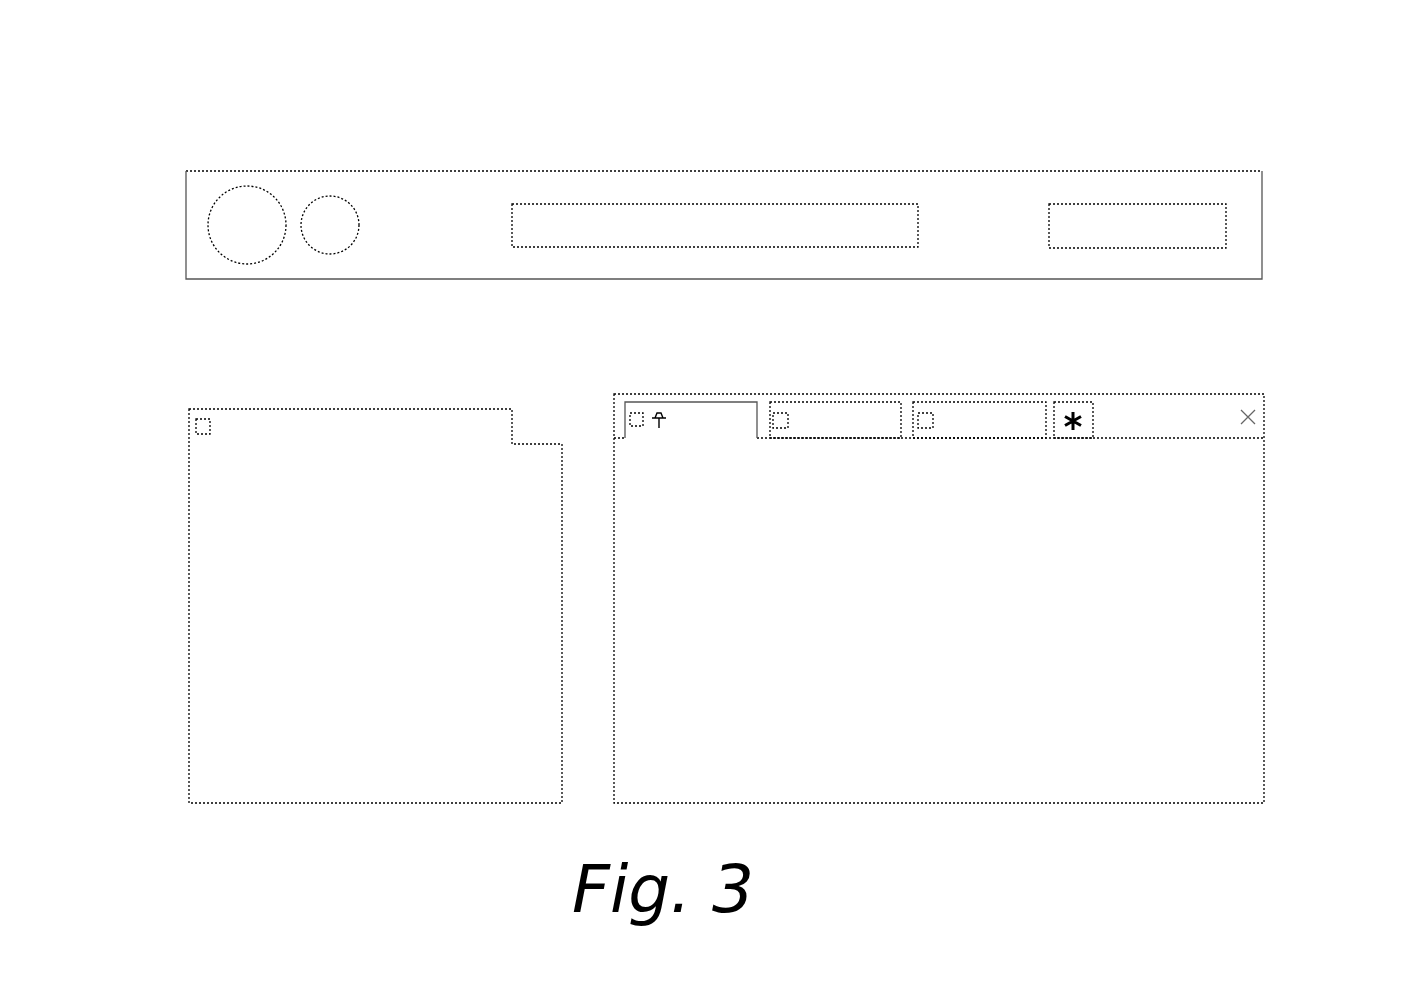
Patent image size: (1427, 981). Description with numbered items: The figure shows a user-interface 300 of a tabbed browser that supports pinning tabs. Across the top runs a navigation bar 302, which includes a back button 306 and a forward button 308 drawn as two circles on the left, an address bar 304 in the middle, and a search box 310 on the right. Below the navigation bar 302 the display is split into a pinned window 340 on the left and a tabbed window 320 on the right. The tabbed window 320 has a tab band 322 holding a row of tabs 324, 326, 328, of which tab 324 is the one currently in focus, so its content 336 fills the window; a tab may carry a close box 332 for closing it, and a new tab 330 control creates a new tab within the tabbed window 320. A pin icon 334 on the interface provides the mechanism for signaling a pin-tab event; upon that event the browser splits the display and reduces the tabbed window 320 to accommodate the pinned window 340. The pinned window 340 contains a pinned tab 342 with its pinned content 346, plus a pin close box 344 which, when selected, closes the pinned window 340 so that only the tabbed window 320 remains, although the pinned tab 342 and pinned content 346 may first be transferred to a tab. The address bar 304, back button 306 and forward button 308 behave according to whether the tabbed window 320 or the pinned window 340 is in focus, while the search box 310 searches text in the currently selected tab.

The user-interface 300 is at (583, 52).
The navigation bar 302 is at (1268, 167).
The address bar 304 is at (714, 204).
The back button 306 is at (247, 186).
The forward button 308 is at (330, 196).
The search box 310 is at (1135, 204).
The tabbed window 320 is at (1007, 576).
The tab band 322 is at (939, 568).
The tab 324 is at (726, 402).
The tab 326 is at (869, 402).
The tab 328 is at (1003, 402).
The new tab 330 is at (1081, 387).
The close box 332 is at (780, 413).
The pin icon 334 is at (659, 412).
The content 336 is at (933, 667).
The pinned window 340 is at (315, 582).
The pinned tab 342 is at (375, 573).
The pin close box 344 is at (219, 393).
The pinned content 346 is at (349, 690).